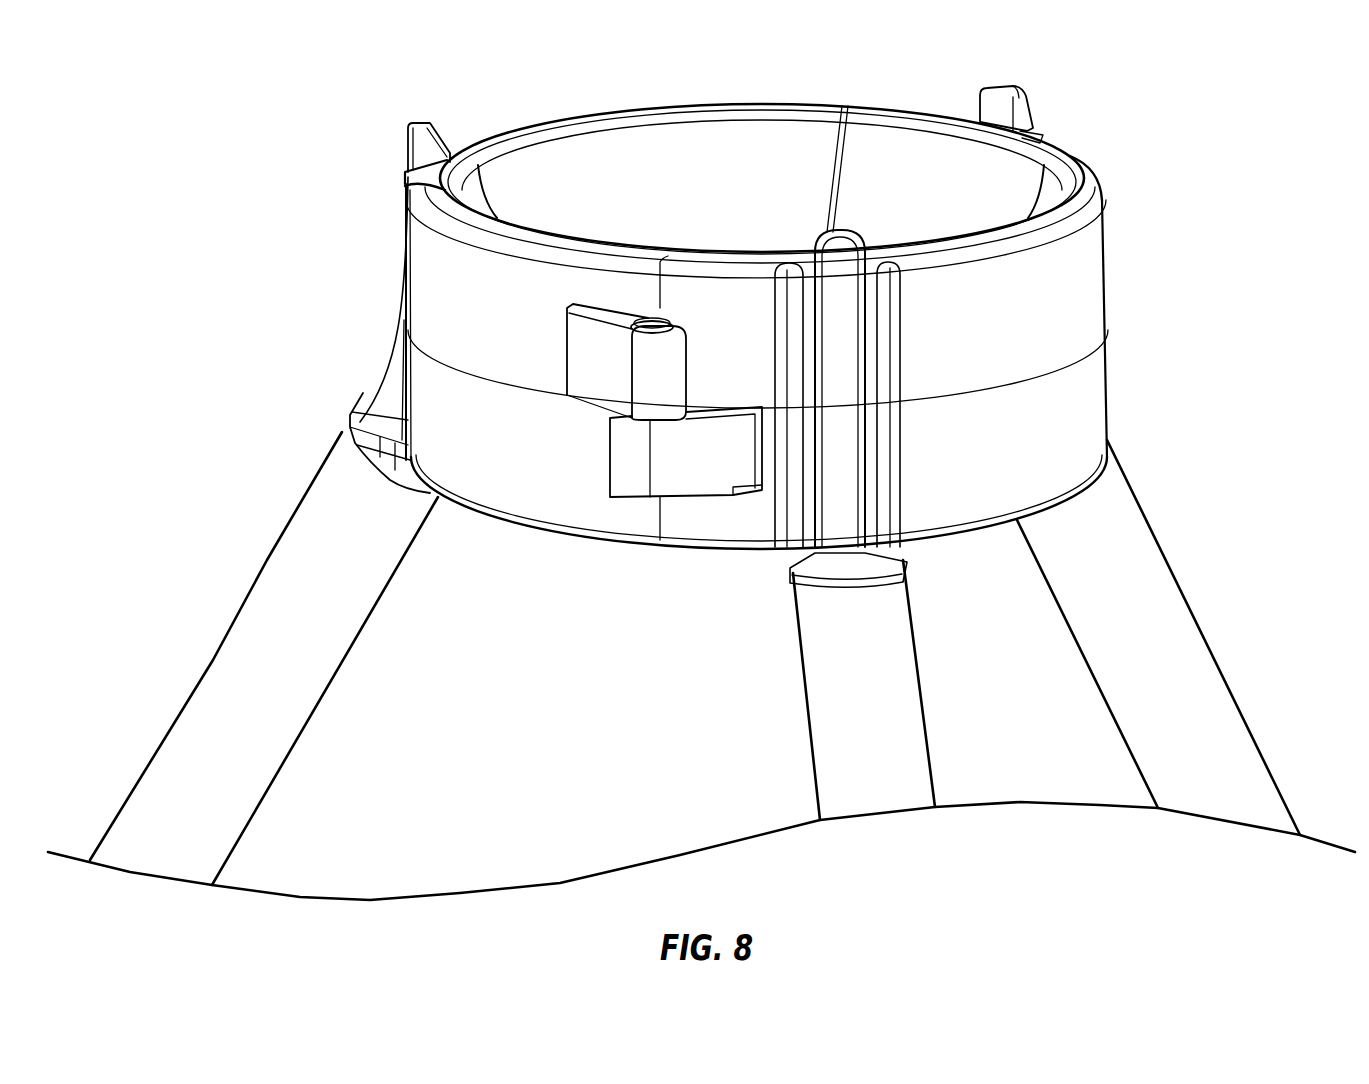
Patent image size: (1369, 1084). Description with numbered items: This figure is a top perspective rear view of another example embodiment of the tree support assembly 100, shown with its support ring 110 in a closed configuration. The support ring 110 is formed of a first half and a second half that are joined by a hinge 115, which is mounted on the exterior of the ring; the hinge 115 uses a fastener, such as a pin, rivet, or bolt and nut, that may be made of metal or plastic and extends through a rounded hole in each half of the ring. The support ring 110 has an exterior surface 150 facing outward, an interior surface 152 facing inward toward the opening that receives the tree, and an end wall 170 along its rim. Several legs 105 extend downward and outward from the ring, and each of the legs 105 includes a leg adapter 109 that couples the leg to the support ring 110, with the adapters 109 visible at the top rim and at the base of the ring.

The tree support assembly 100 is at (1219, 82).
The legs 105 is at (213, 652).
The leg adapters 109 is at (1033, 93).
The support ring 110 is at (557, 507).
The hinge 115 is at (630, 485).
The exterior surface 150 is at (427, 288).
The interior surface 152 is at (632, 155).
The end wall 170 is at (565, 123).